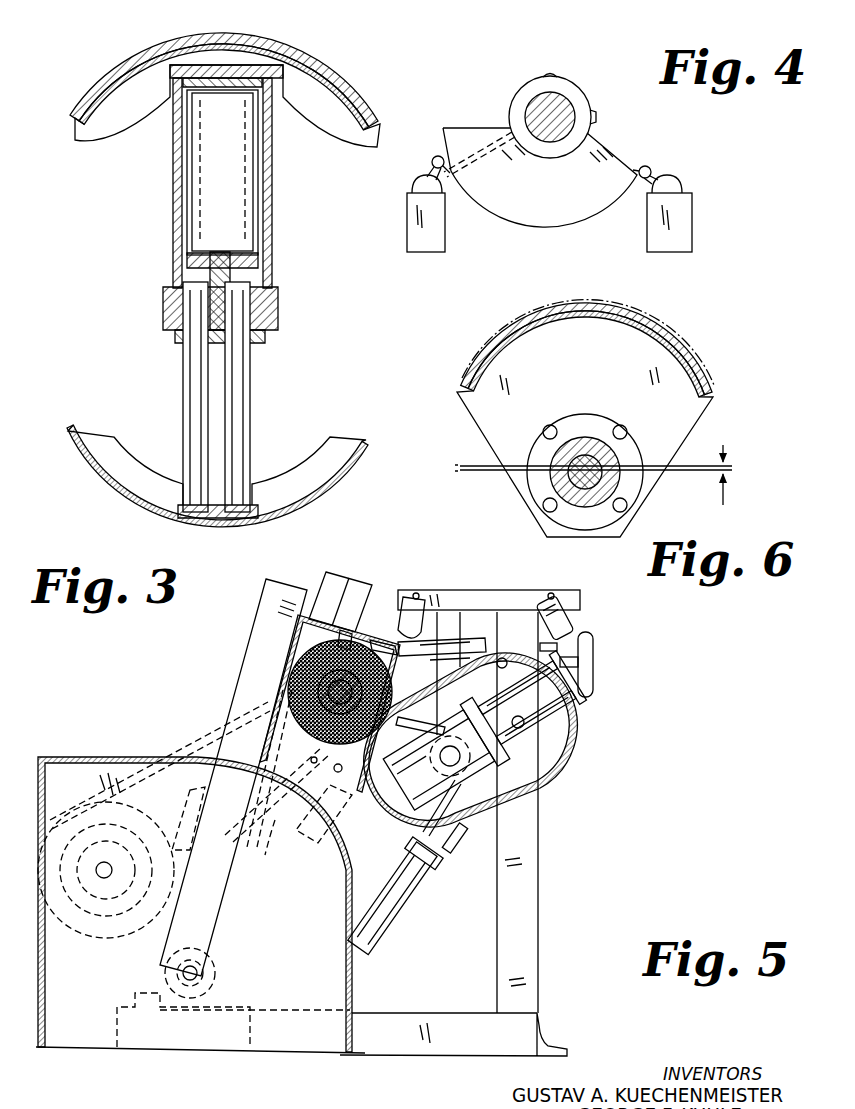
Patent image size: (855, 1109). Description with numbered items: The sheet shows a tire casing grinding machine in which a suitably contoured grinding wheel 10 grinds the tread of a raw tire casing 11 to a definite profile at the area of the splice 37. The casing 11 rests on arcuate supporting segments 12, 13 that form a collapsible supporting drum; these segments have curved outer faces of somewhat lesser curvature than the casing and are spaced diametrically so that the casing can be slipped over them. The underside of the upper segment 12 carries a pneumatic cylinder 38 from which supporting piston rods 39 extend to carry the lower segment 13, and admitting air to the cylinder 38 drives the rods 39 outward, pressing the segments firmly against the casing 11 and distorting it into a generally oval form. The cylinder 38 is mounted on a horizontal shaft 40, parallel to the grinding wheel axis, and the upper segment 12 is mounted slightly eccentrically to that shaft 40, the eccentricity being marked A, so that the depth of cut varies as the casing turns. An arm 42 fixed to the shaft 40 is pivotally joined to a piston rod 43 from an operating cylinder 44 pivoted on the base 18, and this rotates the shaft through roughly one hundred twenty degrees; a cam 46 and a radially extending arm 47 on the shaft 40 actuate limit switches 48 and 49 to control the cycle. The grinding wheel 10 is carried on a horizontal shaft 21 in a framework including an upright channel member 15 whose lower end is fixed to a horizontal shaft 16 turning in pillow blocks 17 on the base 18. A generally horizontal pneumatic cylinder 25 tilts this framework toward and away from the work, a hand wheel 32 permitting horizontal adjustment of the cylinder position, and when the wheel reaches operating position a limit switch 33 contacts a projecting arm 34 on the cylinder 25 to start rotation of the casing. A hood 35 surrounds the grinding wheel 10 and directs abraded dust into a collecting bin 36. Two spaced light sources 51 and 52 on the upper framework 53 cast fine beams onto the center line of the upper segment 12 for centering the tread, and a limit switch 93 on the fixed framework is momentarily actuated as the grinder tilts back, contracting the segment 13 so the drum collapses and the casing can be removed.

In FIG. 5, the grinding wheel 10 is at (318, 672).
In FIG. 3, the tire casing 11 is at (233, 264).
In FIG. 6, the tire casing 11 is at (619, 401).
In FIG. 5, the tire casing 11 is at (508, 771).
In FIG. 3, the upper arcuate supporting segment 12 is at (345, 138).
In FIG. 6, the upper arcuate supporting segment 12 is at (713, 390).
In FIG. 5, the upper arcuate supporting segment 12 is at (452, 836).
In FIG. 3, the lower arcuate supporting segment 13 is at (345, 447).
In FIG. 5, the lower arcuate supporting segment 13 is at (570, 722).
In FIG. 5, the upright channel member 15 is at (265, 623).
In FIG. 5, the horizontally disposed shaft 16 is at (185, 1000).
In FIG. 5, the pillow blocks 17 is at (157, 963).
In FIG. 5, the base 18 is at (403, 1040).
In FIG. 5, the horizontal shaft 21 is at (386, 640).
In FIG. 5, the pneumatic cylinder 25 is at (470, 655).
In FIG. 5, the hand wheel 32 is at (593, 662).
In FIG. 5, the limit switch 33 is at (355, 585).
In FIG. 5, the projecting arm 34 is at (363, 600).
In FIG. 5, the hood 35 is at (303, 612).
In FIG. 5, the collecting bin 36 is at (128, 757).
In FIG. 3, the splice 37 is at (218, 41).
In FIG. 6, the splice 37 is at (587, 303).
In FIG. 3, the pneumatic cylinder 38 is at (272, 198).
In FIG. 5, the pneumatic cylinder 38 is at (487, 808).
In FIG. 3, the supporting piston rods 39 is at (240, 405).
In FIG. 5, the supporting piston rods 39 is at (575, 745).
In FIG. 4, the horizontal shaft 40 is at (566, 105).
In FIG. 6, the horizontal shaft 40 is at (585, 472).
In FIG. 5, the horizontal shaft 40 is at (440, 762).
In FIG. 5, the arm 42 is at (495, 776).
In FIG. 5, the piston rod 43 is at (458, 840).
In FIG. 5, the operating cylinder 44 is at (402, 905).
In FIG. 4, the cam 46 is at (595, 160).
In FIG. 4, the radially extending arm 47 is at (480, 147).
In FIG. 4, the limit switch 48 is at (683, 225).
In FIG. 4, the limit switch 49 is at (445, 235).
In FIG. 5, the light source 51 is at (420, 598).
In FIG. 5, the light source 52 is at (568, 612).
In FIG. 5, the upper framework 53 is at (480, 590).
In FIG. 5, the limit switch 93 is at (264, 851).